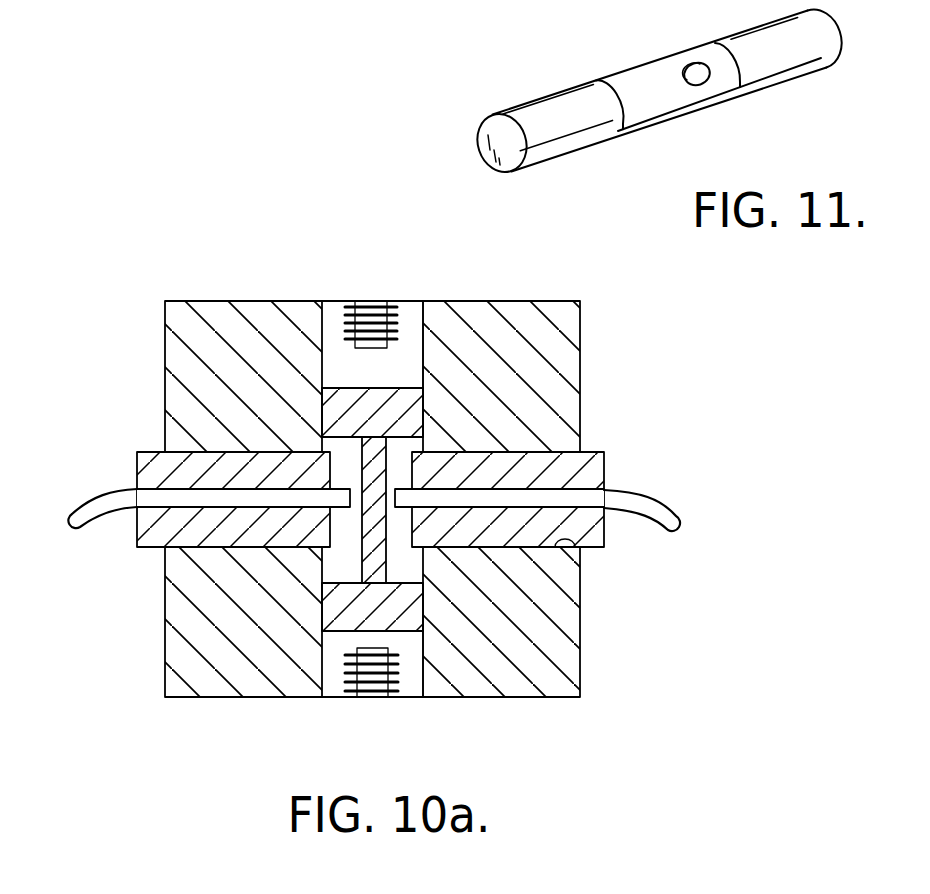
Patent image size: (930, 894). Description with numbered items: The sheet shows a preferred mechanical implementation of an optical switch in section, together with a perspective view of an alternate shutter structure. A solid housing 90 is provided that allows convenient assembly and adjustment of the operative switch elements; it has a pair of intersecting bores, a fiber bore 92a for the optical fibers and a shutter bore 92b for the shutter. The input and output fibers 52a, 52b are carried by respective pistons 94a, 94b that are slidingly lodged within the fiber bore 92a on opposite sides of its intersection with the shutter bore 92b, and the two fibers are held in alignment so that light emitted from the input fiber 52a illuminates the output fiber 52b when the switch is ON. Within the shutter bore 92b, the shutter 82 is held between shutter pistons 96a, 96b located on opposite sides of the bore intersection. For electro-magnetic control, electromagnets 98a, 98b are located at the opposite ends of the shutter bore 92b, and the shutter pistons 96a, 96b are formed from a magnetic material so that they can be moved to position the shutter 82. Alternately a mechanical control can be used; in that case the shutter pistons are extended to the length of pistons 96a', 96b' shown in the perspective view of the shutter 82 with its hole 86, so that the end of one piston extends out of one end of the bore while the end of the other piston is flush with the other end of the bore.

In FIG. 10A, the housing 90 is at (165, 347).
In FIG. 10A, the fiber bore 92a is at (585, 547).
In FIG. 10A, the shutter bore 92b is at (422, 343).
In FIG. 10A, the piston 94a is at (147, 450).
In FIG. 10A, the piston 94b is at (595, 452).
In FIG. 10A, the shutter piston 96a is at (372, 394).
In FIG. 10A, the shutter piston 96b is at (386, 661).
In FIG. 11, the extended shutter piston 96a' is at (563, 149).
In FIG. 11, the extended shutter piston 96b' is at (792, 72).
In FIG. 10A, the electromagnet 98a is at (350, 315).
In FIG. 10A, the electromagnet 98b is at (348, 675).
In FIG. 10A, the shutter 82 is at (362, 550).
In FIG. 11, the shutter 82 is at (650, 100).
In FIG. 11, the hole 86 is at (690, 67).
In FIG. 10A, the input fiber 52a is at (102, 492).
In FIG. 10A, the output fiber 52b is at (647, 497).